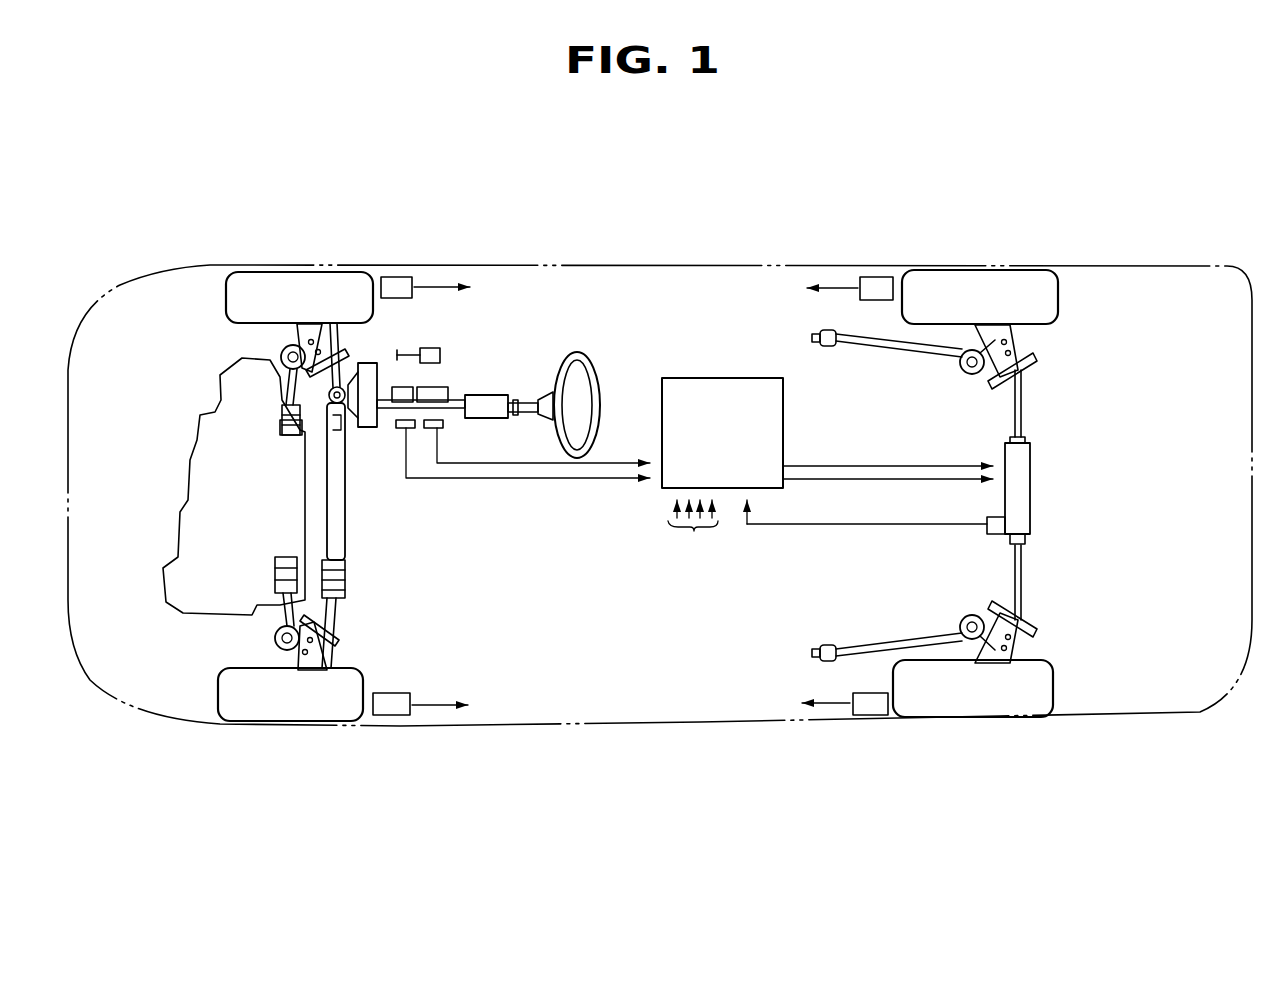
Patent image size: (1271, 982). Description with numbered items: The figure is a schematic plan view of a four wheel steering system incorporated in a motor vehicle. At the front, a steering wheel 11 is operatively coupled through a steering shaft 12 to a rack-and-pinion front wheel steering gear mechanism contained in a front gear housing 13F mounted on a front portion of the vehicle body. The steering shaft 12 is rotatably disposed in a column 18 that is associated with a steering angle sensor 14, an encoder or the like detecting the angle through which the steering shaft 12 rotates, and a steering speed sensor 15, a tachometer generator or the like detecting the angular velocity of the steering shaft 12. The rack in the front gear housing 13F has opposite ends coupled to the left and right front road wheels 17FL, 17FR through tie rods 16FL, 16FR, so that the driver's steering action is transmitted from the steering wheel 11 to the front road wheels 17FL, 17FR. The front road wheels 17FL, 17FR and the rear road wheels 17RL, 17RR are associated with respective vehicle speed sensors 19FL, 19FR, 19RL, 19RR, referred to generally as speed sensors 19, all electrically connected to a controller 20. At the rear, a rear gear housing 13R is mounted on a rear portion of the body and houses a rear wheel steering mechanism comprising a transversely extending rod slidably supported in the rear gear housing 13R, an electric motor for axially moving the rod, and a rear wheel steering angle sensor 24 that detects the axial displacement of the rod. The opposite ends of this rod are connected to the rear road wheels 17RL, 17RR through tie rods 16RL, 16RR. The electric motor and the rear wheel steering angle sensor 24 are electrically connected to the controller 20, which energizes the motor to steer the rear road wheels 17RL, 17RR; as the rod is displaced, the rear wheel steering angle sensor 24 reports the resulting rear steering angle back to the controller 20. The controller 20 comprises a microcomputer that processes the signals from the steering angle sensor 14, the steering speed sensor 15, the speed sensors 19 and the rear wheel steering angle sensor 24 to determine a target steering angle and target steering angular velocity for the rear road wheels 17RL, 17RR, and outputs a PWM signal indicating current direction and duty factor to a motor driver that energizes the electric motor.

The steering wheel 11 is at (588, 368).
The steering shaft 12 is at (433, 408).
The front gear housing 13F is at (337, 548).
The rear gear housing 13R is at (1022, 490).
The steering angle sensor 14 is at (443, 425).
The steering speed sensor 15 is at (393, 430).
The tie rod 16FR is at (337, 337).
The tie rod 16FL is at (332, 620).
The tie rod 16RR is at (1022, 405).
The tie rod 16RL is at (1022, 580).
The right front road wheel 17FR is at (318, 288).
The left front road wheel 17FL is at (307, 702).
The right rear road wheel 17RR is at (1000, 292).
The left rear road wheel 17RL is at (993, 702).
The column 18 is at (493, 400).
The vehicle speed sensor 19FR is at (403, 282).
The vehicle speed sensor 19FL is at (400, 708).
The vehicle speed sensor 19RR is at (879, 288).
The vehicle speed sensor 19RL is at (870, 707).
The speed sensors 19 is at (693, 533).
The controller 20 is at (735, 444).
The rear wheel steering angle sensor 24 is at (993, 538).